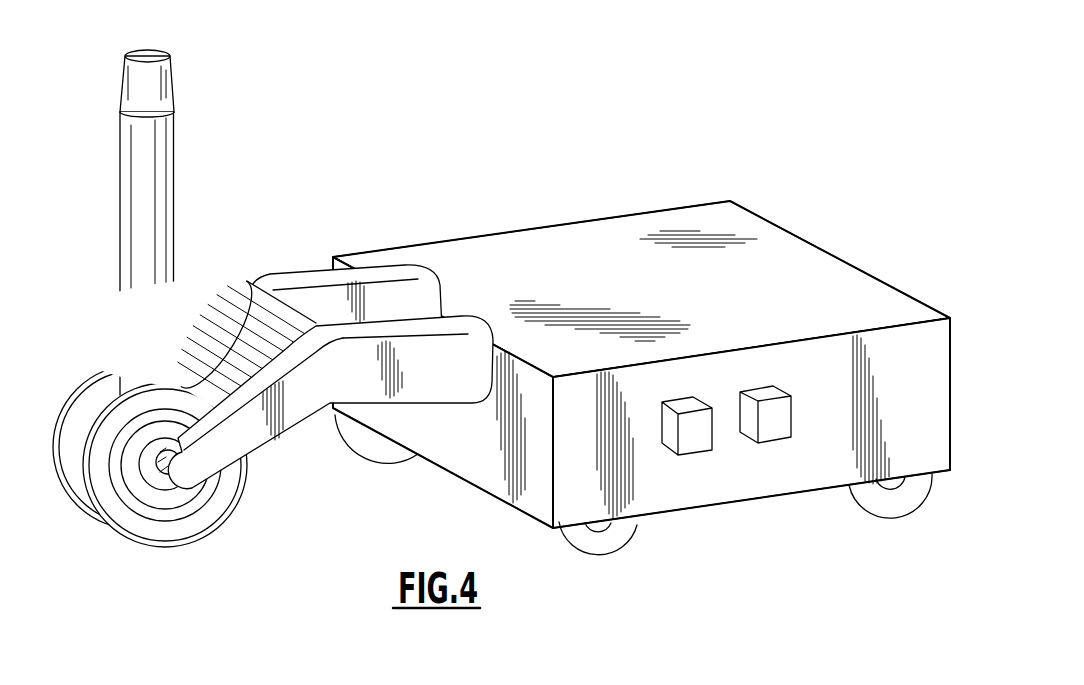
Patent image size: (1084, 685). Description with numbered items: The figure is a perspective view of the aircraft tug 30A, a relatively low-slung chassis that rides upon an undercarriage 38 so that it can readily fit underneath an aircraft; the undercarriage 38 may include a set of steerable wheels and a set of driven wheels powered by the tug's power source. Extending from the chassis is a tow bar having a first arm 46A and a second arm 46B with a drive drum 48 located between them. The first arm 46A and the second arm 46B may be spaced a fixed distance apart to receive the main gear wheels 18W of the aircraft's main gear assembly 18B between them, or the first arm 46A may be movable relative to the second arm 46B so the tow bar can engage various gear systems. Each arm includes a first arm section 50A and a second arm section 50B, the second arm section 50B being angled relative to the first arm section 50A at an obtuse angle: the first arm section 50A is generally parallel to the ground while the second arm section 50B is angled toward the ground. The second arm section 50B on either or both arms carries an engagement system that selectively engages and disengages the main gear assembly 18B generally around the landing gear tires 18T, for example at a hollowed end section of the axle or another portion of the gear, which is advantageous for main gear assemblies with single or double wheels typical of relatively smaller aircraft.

The main gear assembly 18B is at (206, 164).
The main gear wheels 18W is at (170, 339).
The landing gear tires 18T is at (210, 517).
The aircraft tug 30A is at (641, 355).
The undercarriage 38 is at (643, 552).
The first arm 46A is at (325, 429).
The second arm 46B is at (294, 262).
The drive drum 48 is at (207, 300).
The first arm section 50A is at (380, 375).
The second arm section 50B is at (260, 433).